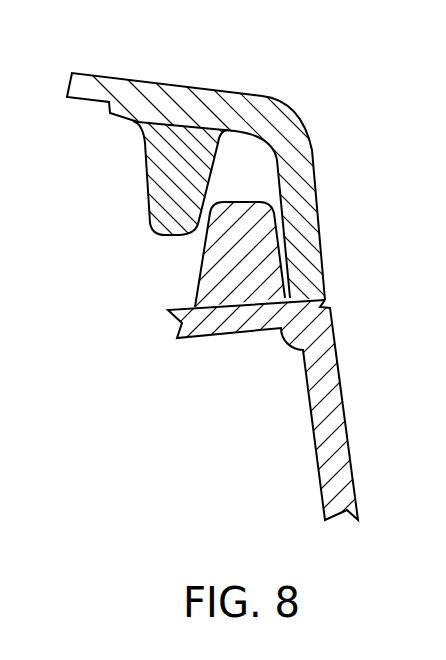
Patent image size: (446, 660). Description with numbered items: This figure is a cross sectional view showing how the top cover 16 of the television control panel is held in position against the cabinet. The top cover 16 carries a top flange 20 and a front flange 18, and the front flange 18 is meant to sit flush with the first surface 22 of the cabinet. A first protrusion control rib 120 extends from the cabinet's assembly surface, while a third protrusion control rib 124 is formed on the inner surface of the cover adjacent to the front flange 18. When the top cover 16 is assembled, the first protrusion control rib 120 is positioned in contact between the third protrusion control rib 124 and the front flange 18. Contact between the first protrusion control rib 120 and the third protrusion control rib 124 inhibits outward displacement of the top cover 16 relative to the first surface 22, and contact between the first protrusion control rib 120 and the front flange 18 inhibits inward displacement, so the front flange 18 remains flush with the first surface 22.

The top cover 16 is at (223, 330).
The front flange 18 is at (318, 202).
The top flange 20 is at (204, 91).
The first surface 22 is at (223, 330).
The first protrusion control rib 120 is at (218, 282).
The third protrusion control rib 124 is at (146, 157).